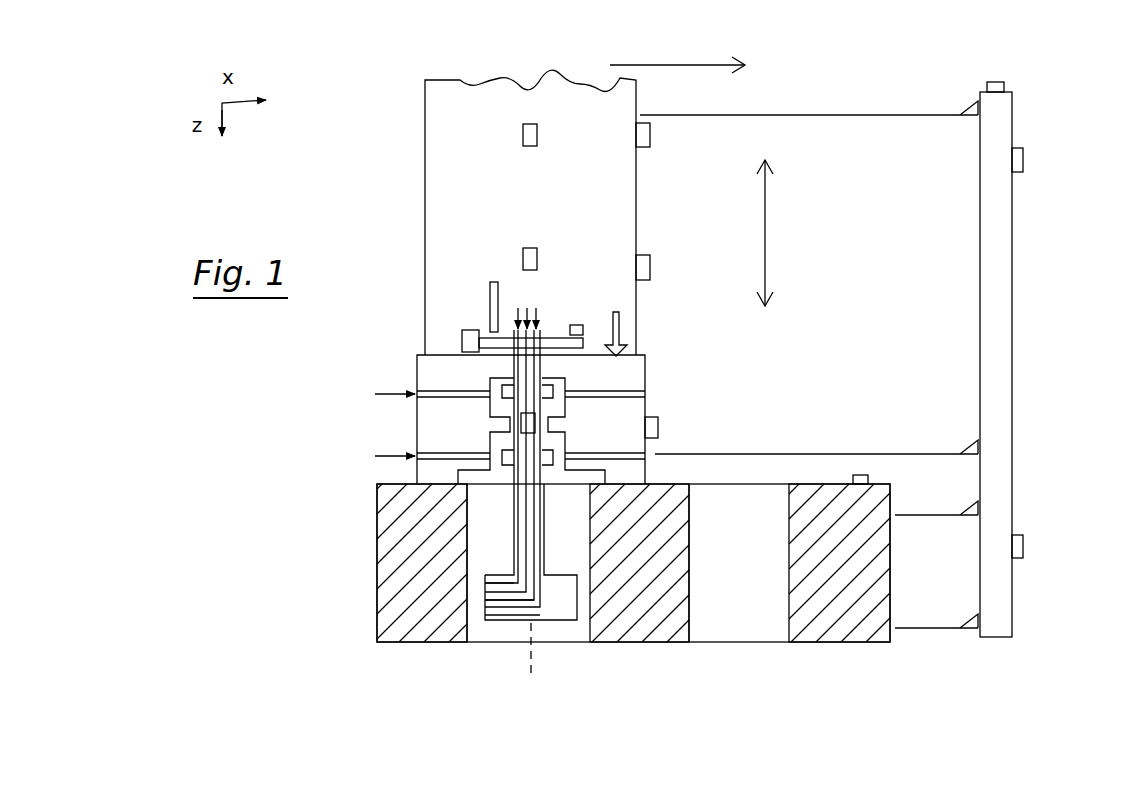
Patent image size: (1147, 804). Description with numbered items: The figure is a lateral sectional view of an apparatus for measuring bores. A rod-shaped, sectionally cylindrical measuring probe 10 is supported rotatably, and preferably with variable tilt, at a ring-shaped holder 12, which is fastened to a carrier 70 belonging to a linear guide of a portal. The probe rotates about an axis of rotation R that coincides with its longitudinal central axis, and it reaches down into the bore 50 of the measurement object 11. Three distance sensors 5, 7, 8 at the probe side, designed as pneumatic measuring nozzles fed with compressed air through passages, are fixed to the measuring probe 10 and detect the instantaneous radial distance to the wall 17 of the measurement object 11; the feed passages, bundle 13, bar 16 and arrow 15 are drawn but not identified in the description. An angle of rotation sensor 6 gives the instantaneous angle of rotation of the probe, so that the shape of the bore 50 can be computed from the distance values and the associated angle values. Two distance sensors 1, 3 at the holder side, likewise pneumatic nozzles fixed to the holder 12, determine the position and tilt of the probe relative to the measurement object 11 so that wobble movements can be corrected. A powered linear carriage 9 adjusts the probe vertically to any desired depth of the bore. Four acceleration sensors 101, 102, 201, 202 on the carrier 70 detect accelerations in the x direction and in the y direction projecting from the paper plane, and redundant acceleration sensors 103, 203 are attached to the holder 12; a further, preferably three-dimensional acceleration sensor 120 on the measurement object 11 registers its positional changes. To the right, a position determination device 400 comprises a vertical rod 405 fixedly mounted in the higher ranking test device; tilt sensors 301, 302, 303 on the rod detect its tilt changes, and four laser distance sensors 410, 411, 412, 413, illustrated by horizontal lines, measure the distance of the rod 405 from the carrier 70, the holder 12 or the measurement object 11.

The carrier 70 is at (530, 212).
The acceleration sensor 201 is at (546, 135).
The acceleration sensor 202 is at (546, 259).
The acceleration sensor 203 is at (562, 422).
The acceleration sensor 101 is at (658, 135).
The acceleration sensor 102 is at (662, 267).
The acceleration sensor 103 is at (667, 427).
The holder 12 is at (630, 378).
The distance sensor at the holder side 1 is at (488, 392).
The distance sensor at the holder side 3 is at (490, 452).
The conduit bundle 13 is at (512, 445).
The measuring probe 10 is at (563, 586).
The distance sensor 7 is at (481, 584).
The distance sensor 8 is at (481, 600).
The distance sensor 5 is at (481, 615).
The linear carriage 9 is at (496, 305).
The holder plate 16 is at (522, 332).
The angle of rotation sensor 6 is at (586, 312).
The movement direction arrow 15 is at (615, 323).
The measurement object 11 is at (404, 535).
The bore 50 is at (490, 632).
The wall 17 is at (471, 538).
The axis of rotation R is at (533, 657).
The acceleration sensor 120 is at (857, 474).
The position determination device 400 is at (879, 349).
The rod 405 is at (997, 385).
The tilt sensor 303 is at (995, 77).
The tilt sensor 301 is at (1032, 160).
The tilt sensor 302 is at (1032, 546).
The distance sensor 410 is at (976, 106).
The distance sensor 411 is at (977, 446).
The distance sensor 412 is at (977, 519).
The distance sensor 413 is at (970, 632).